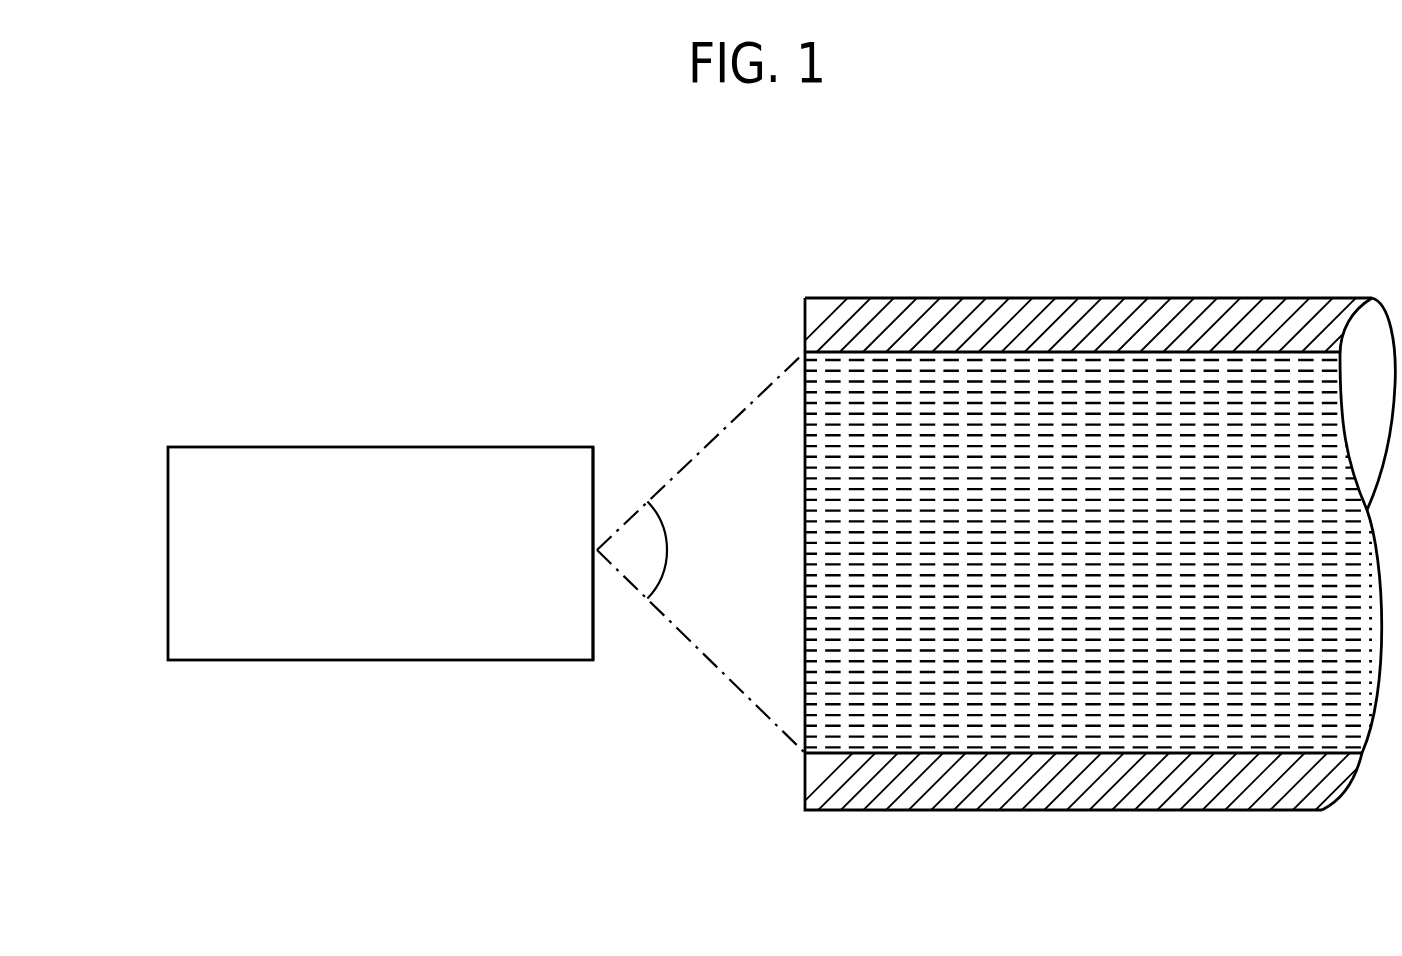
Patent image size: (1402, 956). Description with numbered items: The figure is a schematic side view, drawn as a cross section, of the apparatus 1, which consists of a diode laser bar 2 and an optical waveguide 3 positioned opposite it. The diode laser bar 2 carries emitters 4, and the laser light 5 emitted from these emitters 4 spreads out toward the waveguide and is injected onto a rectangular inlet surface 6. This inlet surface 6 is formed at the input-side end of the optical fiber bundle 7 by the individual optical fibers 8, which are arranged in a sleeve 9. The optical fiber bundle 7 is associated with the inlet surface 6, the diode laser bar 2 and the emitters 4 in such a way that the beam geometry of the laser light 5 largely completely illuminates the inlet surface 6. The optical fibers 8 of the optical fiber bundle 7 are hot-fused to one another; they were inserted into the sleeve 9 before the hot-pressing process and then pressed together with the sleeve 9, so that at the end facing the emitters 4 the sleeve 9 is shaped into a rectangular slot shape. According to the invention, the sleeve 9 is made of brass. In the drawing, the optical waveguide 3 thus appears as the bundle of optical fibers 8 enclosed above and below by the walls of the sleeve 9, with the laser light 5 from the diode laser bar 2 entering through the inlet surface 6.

The apparatus 1 is at (522, 727).
The diode laser bar 2 is at (311, 470).
The optical waveguide 3 is at (990, 862).
The emitters 4 is at (597, 513).
The laser light 5 is at (735, 455).
The inlet surface 6 is at (790, 630).
The optical fiber bundle 7 is at (944, 495).
The optical fibers 8 is at (1046, 390).
The sleeve 9 is at (1160, 330).